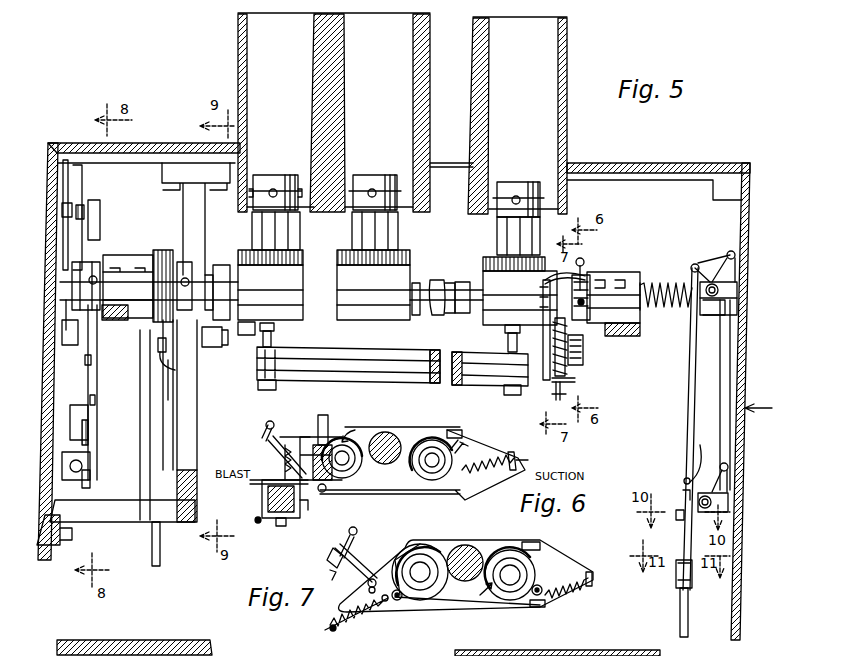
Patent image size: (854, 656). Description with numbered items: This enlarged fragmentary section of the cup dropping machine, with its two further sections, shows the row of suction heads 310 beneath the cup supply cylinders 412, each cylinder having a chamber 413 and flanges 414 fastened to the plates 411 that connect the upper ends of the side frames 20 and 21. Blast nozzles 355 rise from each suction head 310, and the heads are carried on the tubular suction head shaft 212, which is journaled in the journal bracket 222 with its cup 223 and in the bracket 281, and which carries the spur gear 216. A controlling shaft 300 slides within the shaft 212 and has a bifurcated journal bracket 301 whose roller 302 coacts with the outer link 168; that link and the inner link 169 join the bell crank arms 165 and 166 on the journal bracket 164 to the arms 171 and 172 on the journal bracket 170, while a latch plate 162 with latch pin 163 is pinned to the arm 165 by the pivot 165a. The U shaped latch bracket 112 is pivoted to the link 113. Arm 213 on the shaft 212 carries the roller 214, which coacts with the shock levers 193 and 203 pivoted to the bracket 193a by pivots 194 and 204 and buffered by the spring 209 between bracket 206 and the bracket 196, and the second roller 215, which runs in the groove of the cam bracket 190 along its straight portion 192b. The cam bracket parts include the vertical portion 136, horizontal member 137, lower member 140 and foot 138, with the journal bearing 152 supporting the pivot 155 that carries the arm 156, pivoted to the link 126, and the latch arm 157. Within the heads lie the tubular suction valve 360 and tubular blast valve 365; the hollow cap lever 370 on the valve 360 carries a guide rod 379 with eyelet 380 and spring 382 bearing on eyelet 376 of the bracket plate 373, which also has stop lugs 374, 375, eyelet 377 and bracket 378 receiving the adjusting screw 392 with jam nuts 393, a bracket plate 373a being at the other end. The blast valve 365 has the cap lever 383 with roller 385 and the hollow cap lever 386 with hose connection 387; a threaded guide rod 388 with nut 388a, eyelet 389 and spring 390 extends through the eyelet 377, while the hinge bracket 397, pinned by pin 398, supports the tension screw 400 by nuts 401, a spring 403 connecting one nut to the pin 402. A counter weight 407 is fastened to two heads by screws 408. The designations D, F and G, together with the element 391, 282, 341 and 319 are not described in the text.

In FIG. 5, the cup supply cylinder 412 is at (238, 36).
In FIG. 5, the chamber 413 is at (402, 148).
In FIG. 5, the blast nozzle 355 is at (252, 218).
In FIG. 5, the suction head 310 is at (337, 255).
In FIG. 5, the bracket plate 373a is at (238, 296).
In FIG. 5, the bracket plate 373 is at (528, 392).
In FIG. 6, the bracket plate 373 is at (390, 428).
In FIG. 7, the bracket plate 373 is at (480, 548).
In FIG. 5, the bracket 196 is at (72, 285).
In FIG. 5, the cup 223 is at (122, 255).
In FIG. 5, the spur gear 216 is at (163, 250).
In FIG. 5, the roller 385 is at (222, 265).
In FIG. 5, the tubular suction head shaft 212 is at (462, 282).
In FIG. 6, the tubular suction head shaft 212 is at (395, 440).
In FIG. 7, the tubular suction head shaft 212 is at (462, 546).
In FIG. 5, the controlling shaft 300 is at (436, 312).
In FIG. 6, the controlling shaft 300 is at (400, 448).
In FIG. 7, the controlling shaft 300 is at (480, 562).
In FIG. 5, the tubular blast valve 365 is at (470, 316).
In FIG. 6, the tubular blast valve 365 is at (355, 468).
In FIG. 7, the tubular blast valve 365 is at (432, 586).
In FIG. 5, the hollow cap lever 386 is at (543, 298).
In FIG. 6, the hollow cap lever 386 is at (332, 445).
In FIG. 7, the hollow cap lever 386 is at (417, 555).
In FIG. 5, the bracket 378 is at (560, 275).
In FIG. 6, the bracket 378 is at (268, 440).
In FIG. 7, the bracket 378 is at (360, 566).
In FIG. 5, the adjusting screw 392 is at (581, 259).
In FIG. 6, the adjusting screw 392 is at (271, 420).
In FIG. 7, the adjusting screw 392 is at (355, 527).
In FIG. 5, the pin 402 is at (585, 300).
In FIG. 6, the pin 402 is at (298, 436).
In FIG. 5, the block 282 is at (618, 278).
In FIG. 5, the bifurcated journal bracket 301 is at (690, 305).
In FIG. 5, the bracket 281 is at (582, 352).
In FIG. 5, the hinge bracket 397 is at (583, 362).
In FIG. 6, the hinge bracket 397 is at (294, 520).
In FIG. 5, the spring 403 is at (571, 378).
In FIG. 6, the spring 403 is at (262, 496).
In FIG. 5, the pin 391 is at (562, 386).
In FIG. 5, the threaded guide rod 388 is at (570, 399).
In FIG. 6, the threaded guide rod 388 is at (256, 518).
In FIG. 7, the threaded guide rod 388 is at (332, 626).
In FIG. 5, the screw 408 is at (274, 331).
In FIG. 5, the counter weight 407 is at (362, 355).
In FIG. 5, the cap lever 383 is at (240, 332).
In FIG. 5, the direction arrow D is at (758, 399).
In FIG. 5, the plate 411 is at (140, 152).
In FIG. 5, the side frame 21 is at (45, 330).
In FIG. 5, the side frame 20 is at (749, 228).
In FIG. 5, the foot 138 is at (192, 170).
In FIG. 5, the second roller 215 is at (68, 210).
In FIG. 5, the roller 214 is at (94, 215).
In FIG. 5, the arm 213 is at (76, 240).
In FIG. 5, the shock lever 193 is at (97, 350).
In FIG. 5, the bracket 193a is at (72, 372).
In FIG. 5, the pivot 194 is at (95, 364).
In FIG. 5, the journal bracket 222 is at (148, 312).
In FIG. 5, the latch arm 157 is at (200, 322).
In FIG. 5, the pivot 155 is at (158, 345).
In FIG. 5, the journal bearing 152 is at (212, 347).
In FIG. 5, the arm 156 is at (180, 370).
In FIG. 5, the vertical portion 136 is at (190, 455).
In FIG. 5, the horizontal member 137 is at (197, 495).
In FIG. 5, the lower member 140 is at (116, 522).
In FIG. 5, the link 126 is at (152, 536).
In FIG. 5, the cam bracket 190 is at (50, 390).
In FIG. 5, the pivot 204 is at (95, 398).
In FIG. 5, the second shock lever 203 is at (88, 436).
In FIG. 5, the helical buffer spring 209 is at (90, 466).
In FIG. 5, the bracket 206 is at (90, 480).
In FIG. 5, the inner link 169 is at (690, 377).
In FIG. 5, the outer link 168 is at (728, 347).
In FIG. 5, the journal bracket 170 is at (737, 292).
In FIG. 5, the arm 171 is at (710, 262).
In FIG. 5, the arm 172 is at (725, 252).
In FIG. 5, the roller 302 is at (712, 318).
In FIG. 5, the arm 165 is at (706, 458).
In FIG. 5, the pivot 165a is at (684, 480).
In FIG. 5, the latch plate 162 is at (683, 495).
In FIG. 5, the arm 166 is at (725, 478).
In FIG. 5, the journal bracket 164 is at (728, 503).
In FIG. 5, the latch pin 163 is at (676, 520).
In FIG. 5, the U shaped latch bracket 112 is at (676, 570).
In FIG. 5, the link 113 is at (680, 618).
In FIG. 5, the flange 414 is at (200, 640).
In FIG. 5, the straight portion 192b is at (150, 634).
In FIG. 6, the hose connection 387 is at (322, 415).
In FIG. 6, the direction arrow F is at (357, 423).
In FIG. 6, the stop lug 375 is at (450, 428).
In FIG. 7, the stop lug 375 is at (531, 542).
In FIG. 6, the tubular suction valve 360 is at (428, 478).
In FIG. 7, the tubular suction valve 360 is at (525, 568).
In FIG. 6, the hollow cap lever 370 is at (445, 487).
In FIG. 7, the hollow cap lever 370 is at (500, 600).
In FIG. 6, the screw 341 is at (462, 446).
In FIG. 6, the eyelet 376 is at (514, 455).
In FIG. 7, the eyelet 376 is at (590, 570).
In FIG. 6, the pin 319 is at (520, 462).
In FIG. 6, the jam nut 393 is at (268, 430).
In FIG. 7, the jam nut 393 is at (338, 548).
In FIG. 6, the pin 398 is at (326, 490).
In FIG. 6, the nut 401 is at (314, 509).
In FIG. 6, the tension screw 400 is at (280, 526).
In FIG. 7, the eyelet 389 is at (400, 600).
In FIG. 7, the eyelet 380 is at (540, 596).
In FIG. 7, the stop lug 374 is at (533, 608).
In FIG. 7, the spring 382 is at (575, 592).
In FIG. 7, the guide rod 379 is at (592, 578).
In FIG. 7, the eyelet 377 is at (350, 622).
In FIG. 7, the spring 390 is at (378, 600).
In FIG. 7, the nut 388a is at (390, 603).
In FIG. 7, the direction arrow G is at (474, 603).